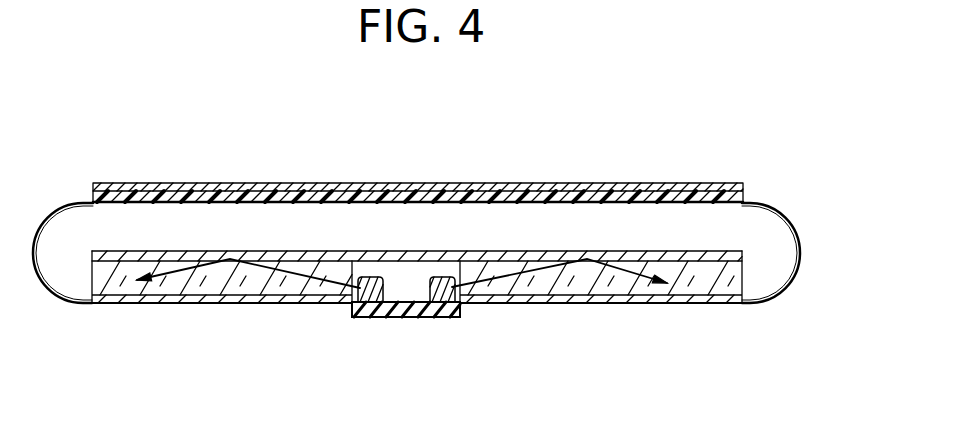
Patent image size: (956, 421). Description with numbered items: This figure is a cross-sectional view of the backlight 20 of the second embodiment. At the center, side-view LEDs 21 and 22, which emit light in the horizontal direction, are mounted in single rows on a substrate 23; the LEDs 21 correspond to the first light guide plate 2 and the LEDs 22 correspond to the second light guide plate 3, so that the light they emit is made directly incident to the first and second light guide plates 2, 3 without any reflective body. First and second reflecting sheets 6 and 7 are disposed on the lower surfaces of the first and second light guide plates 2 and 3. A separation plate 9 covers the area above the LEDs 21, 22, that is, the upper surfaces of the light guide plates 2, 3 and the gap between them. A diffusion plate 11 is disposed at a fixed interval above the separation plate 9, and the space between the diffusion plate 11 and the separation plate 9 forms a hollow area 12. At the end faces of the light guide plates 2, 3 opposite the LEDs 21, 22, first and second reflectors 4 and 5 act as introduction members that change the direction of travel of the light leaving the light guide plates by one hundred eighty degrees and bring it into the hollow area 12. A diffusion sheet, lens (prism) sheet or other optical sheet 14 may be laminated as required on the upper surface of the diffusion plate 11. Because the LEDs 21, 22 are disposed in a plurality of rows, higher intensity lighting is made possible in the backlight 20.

The first light guide plate 2 is at (238, 283).
The second light guide plate 3 is at (607, 283).
The first reflector 4 is at (68, 298).
The second reflector 5 is at (750, 305).
The first reflecting sheet 6 is at (170, 302).
The second reflecting sheet 7 is at (530, 300).
The separation plate 9 is at (437, 255).
The diffusion plate 11 is at (600, 187).
The hollow area 12 is at (147, 222).
The optical sheet 14 is at (230, 183).
The backlight 20 is at (818, 213).
The LEDs 21 is at (365, 295).
The LEDs 22 is at (442, 295).
The substrate 23 is at (405, 308).